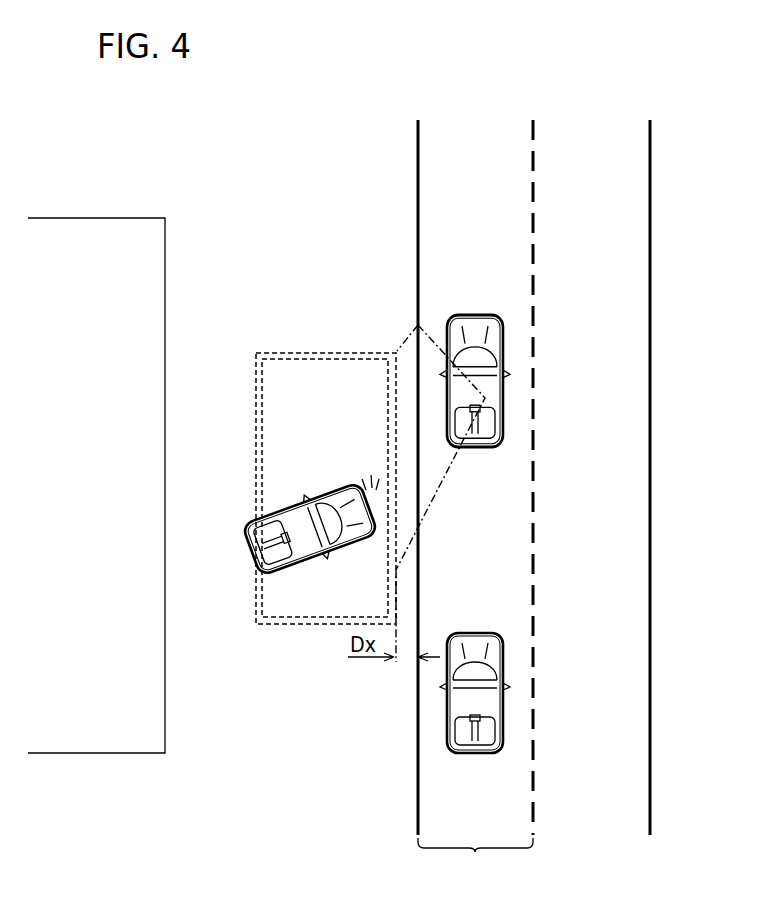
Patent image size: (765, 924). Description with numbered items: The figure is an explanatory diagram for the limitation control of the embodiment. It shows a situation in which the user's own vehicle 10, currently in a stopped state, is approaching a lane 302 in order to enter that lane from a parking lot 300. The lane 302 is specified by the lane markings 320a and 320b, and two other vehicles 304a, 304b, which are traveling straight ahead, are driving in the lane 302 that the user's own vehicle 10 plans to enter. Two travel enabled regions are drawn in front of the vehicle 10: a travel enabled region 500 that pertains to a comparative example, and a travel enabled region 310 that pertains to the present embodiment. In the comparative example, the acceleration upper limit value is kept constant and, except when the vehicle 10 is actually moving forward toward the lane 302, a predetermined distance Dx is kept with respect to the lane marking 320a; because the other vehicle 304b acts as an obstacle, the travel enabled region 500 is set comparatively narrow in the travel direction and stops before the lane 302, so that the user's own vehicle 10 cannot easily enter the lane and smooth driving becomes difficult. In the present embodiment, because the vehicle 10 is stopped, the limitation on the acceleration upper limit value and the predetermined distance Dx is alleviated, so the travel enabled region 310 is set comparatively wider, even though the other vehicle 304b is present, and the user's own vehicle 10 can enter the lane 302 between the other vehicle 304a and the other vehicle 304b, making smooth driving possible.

The parking lot 300 is at (105, 230).
The travel enabled region 500 is at (391, 371).
The travel enabled region 310 is at (262, 603).
The user's own vehicle 10 is at (308, 500).
The other vehicle 304a is at (503, 343).
The other vehicle 304b is at (503, 658).
The lane marking 320a is at (416, 802).
The lane marking 320b is at (534, 788).
The lane 302 is at (475, 856).